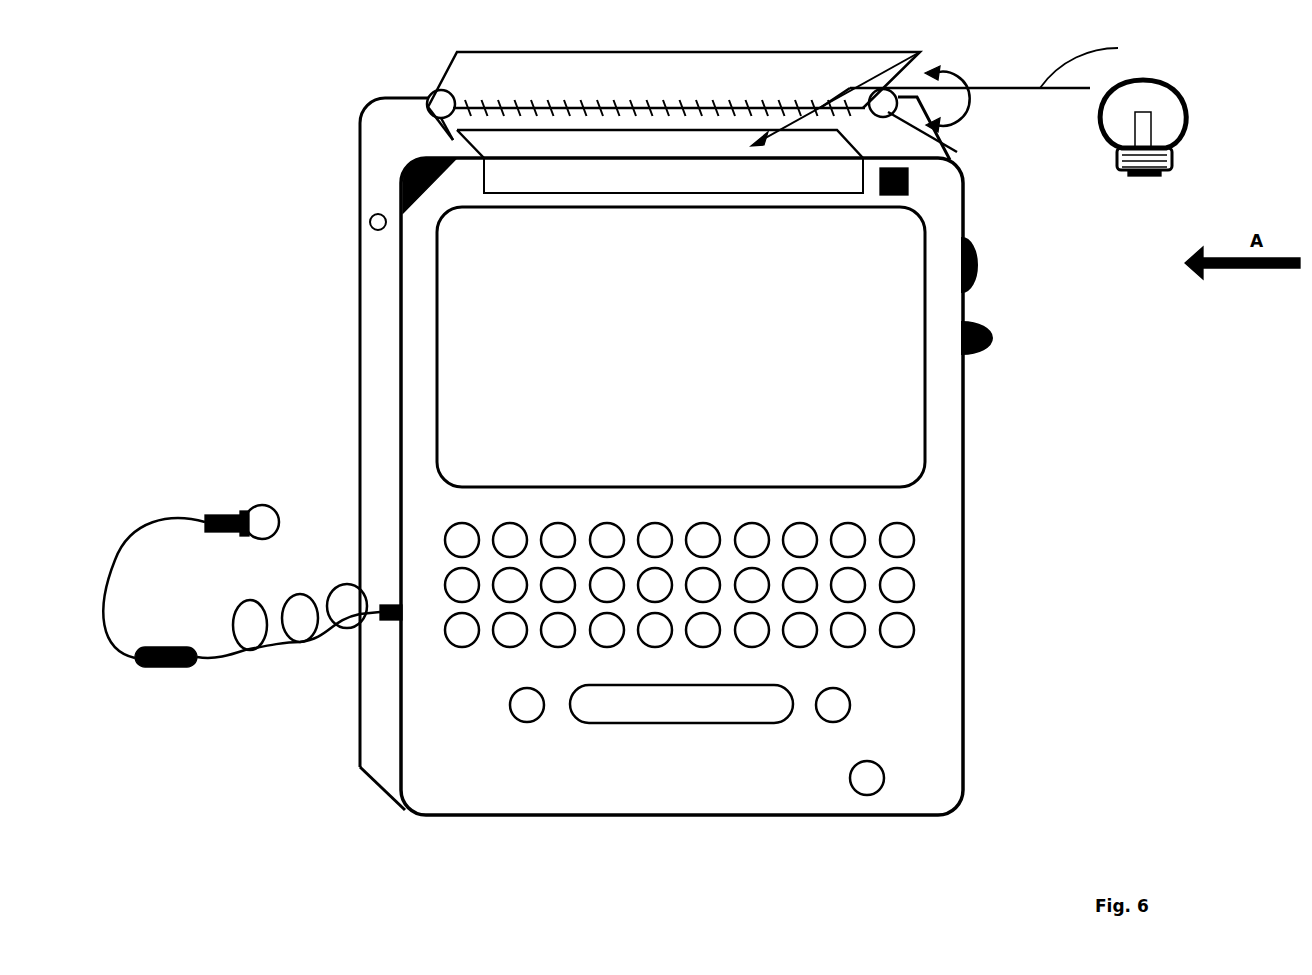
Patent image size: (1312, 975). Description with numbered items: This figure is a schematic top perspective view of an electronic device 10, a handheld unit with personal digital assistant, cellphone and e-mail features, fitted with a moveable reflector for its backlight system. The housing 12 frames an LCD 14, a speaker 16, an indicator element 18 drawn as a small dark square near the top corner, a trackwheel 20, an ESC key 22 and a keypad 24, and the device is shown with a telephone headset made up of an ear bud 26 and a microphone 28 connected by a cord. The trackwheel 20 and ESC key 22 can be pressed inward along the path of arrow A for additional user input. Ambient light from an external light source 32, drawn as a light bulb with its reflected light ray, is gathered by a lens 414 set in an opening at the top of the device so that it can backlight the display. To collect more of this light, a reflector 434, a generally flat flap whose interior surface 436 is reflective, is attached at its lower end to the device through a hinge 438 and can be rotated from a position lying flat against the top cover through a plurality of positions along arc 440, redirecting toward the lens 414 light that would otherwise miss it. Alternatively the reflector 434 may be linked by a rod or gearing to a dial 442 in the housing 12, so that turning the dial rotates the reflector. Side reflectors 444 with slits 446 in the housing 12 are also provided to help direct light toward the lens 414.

The electronic device 10 is at (572, 815).
The housing 12 is at (805, 790).
The LCD 14 is at (905, 408).
The speaker 16 is at (387, 178).
The light sensor 18 is at (915, 183).
The trackwheel 20 is at (995, 263).
The ESC key 22 is at (1000, 340).
The keypad 24 is at (913, 583).
The ear bud 26 is at (280, 500).
The microphone 28 is at (165, 632).
The external light source 32 is at (1193, 148).
The lens 414 is at (688, 105).
The reflector 434 is at (440, 72).
The interior surface 436 is at (490, 68).
The hinge 438 is at (617, 105).
The arc 440 is at (953, 78).
The dial 442 is at (368, 223).
The side reflectors 444 is at (428, 100).
The slits 446 is at (430, 114).